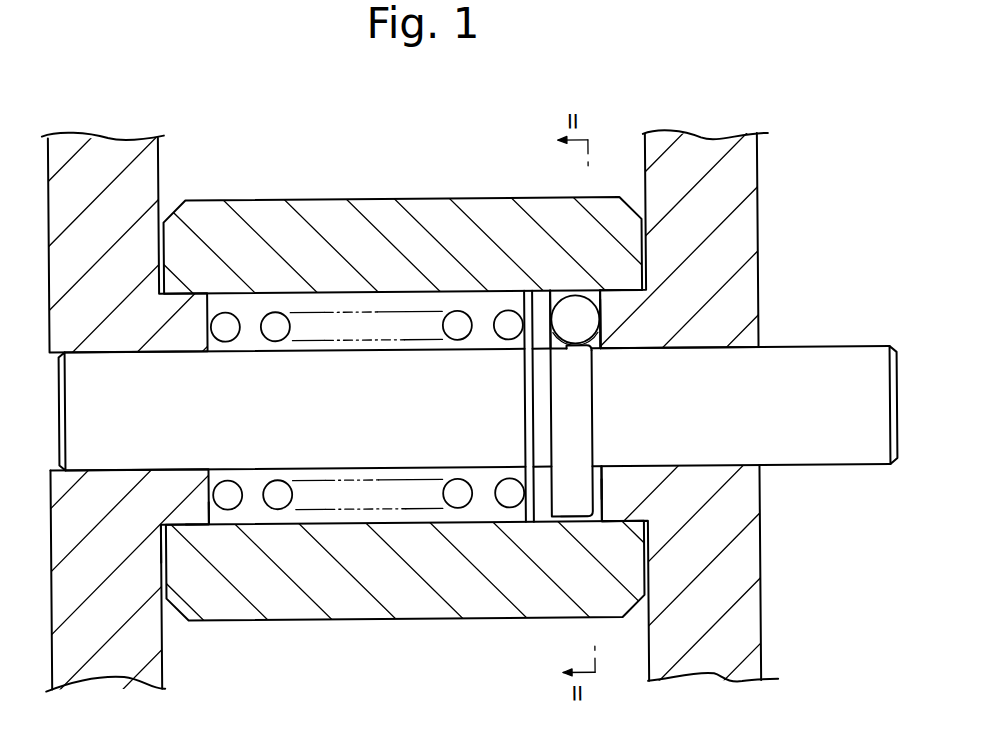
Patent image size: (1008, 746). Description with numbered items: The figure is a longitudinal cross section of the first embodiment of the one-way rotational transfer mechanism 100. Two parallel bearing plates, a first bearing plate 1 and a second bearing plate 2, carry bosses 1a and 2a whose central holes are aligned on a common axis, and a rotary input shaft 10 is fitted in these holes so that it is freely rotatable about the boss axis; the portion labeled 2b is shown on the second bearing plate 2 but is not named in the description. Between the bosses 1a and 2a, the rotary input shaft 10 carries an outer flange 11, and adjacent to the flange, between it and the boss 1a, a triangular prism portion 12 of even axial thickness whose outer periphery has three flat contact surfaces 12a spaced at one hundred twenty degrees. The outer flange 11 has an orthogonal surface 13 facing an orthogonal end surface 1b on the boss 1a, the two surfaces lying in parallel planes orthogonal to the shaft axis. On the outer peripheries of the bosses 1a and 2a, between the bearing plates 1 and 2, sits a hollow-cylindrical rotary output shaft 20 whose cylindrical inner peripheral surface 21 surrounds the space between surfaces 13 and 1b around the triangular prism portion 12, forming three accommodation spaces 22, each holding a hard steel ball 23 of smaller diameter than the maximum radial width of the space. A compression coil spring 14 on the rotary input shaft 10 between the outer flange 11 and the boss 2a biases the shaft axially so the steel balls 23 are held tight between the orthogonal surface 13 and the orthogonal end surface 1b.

The first bearing plate 1 is at (746, 315).
The boss 1a is at (614, 503).
The orthogonal end surface 1b is at (594, 507).
The second bearing plate 2 is at (131, 663).
The boss 2a is at (188, 515).
The housing step 2b is at (216, 516).
The rotary input shaft 10 is at (827, 343).
The outer flange 11 is at (534, 428).
The triangular prism portion 12 is at (581, 418).
The contact surfaces 12a is at (604, 334).
The orthogonal surface 13 is at (560, 295).
The compression coil spring 14 is at (278, 314).
The hollow-cylindrical rotary output shaft 20 is at (401, 198).
The cylindrical inner peripheral surface 21 is at (580, 302).
The accommodation spaces 22 is at (575, 338).
The steel ball 23 is at (569, 323).
The one-way rotational transfer mechanism 100 is at (798, 195).